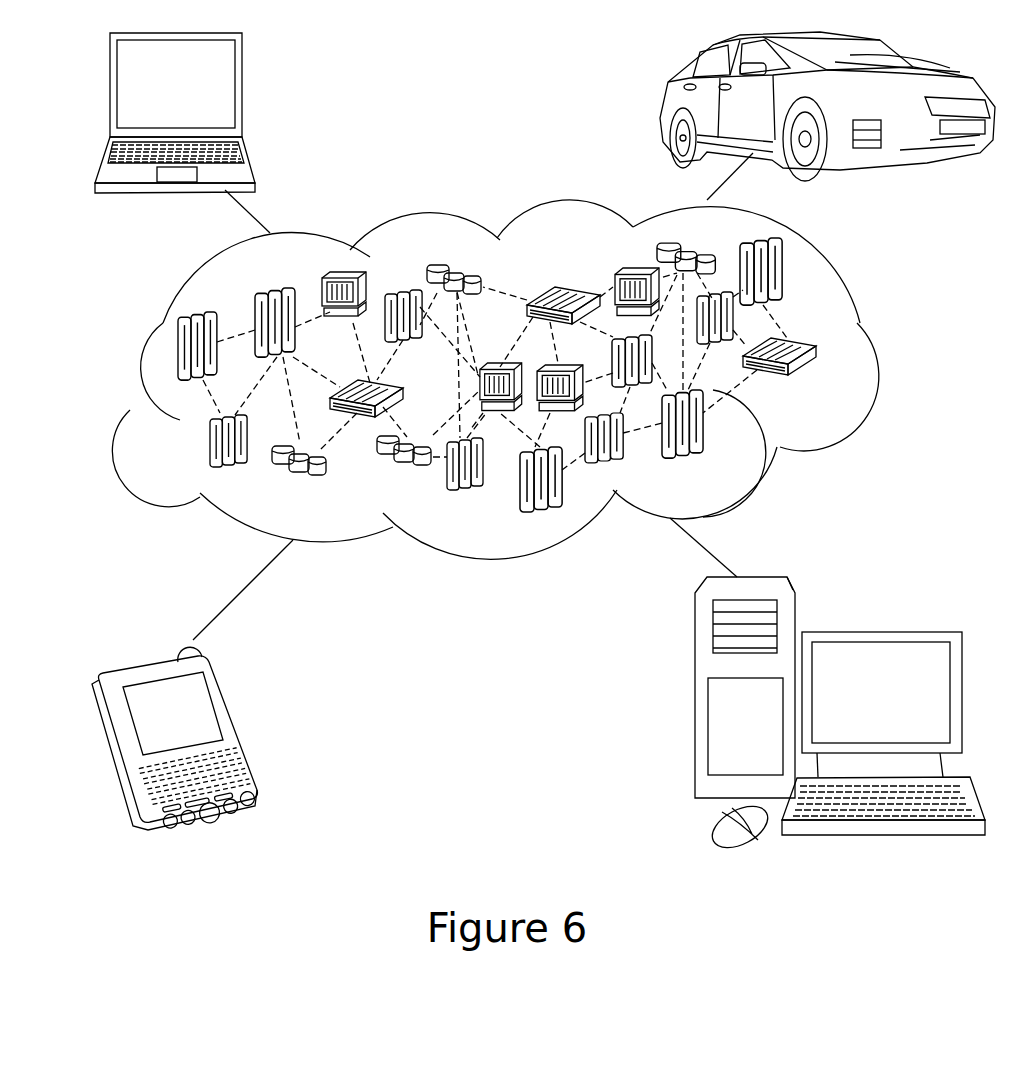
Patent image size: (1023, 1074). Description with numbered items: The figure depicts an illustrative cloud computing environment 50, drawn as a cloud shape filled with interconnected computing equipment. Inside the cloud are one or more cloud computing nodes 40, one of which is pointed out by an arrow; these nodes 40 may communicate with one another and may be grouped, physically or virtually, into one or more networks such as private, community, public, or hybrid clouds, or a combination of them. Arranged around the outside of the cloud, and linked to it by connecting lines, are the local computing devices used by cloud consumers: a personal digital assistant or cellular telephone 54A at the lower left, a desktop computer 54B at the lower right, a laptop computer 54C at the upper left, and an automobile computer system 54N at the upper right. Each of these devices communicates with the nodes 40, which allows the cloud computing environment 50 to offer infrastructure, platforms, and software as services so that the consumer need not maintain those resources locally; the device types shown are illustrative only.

The laptop computer 54C is at (240, 92).
The automobile computer system 54N is at (663, 103).
The cloud computing environment 50 is at (524, 379).
The cloud computing node 40 is at (850, 397).
The personal digital assistant or cellular telephone 54A is at (237, 723).
The desktop computer 54B is at (877, 630).